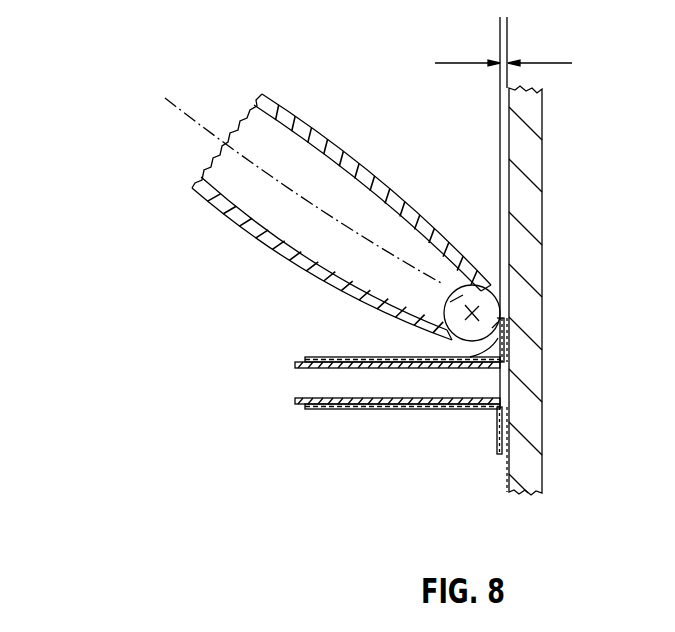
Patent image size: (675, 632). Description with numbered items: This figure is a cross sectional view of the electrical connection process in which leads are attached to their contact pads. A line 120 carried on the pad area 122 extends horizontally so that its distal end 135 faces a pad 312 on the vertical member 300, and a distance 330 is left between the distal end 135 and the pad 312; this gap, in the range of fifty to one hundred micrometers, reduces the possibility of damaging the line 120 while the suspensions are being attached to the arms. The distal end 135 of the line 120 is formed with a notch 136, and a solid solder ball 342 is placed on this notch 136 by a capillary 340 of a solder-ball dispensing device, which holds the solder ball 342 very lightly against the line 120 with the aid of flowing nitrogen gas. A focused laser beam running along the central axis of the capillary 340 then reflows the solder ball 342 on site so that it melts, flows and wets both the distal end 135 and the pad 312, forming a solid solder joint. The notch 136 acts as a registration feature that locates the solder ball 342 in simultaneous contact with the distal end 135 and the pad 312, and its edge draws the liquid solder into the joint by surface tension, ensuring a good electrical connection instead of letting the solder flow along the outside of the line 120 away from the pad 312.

The plate / substrate 300 is at (537, 203).
The distance 330 is at (524, 168).
The capillary 340 is at (343, 147).
The solder ball 342 is at (477, 293).
The line 120 is at (397, 358).
The pad area 122 is at (358, 371).
The distal end 135 is at (461, 367).
The notch 136 is at (504, 318).
The pad 312 is at (512, 350).